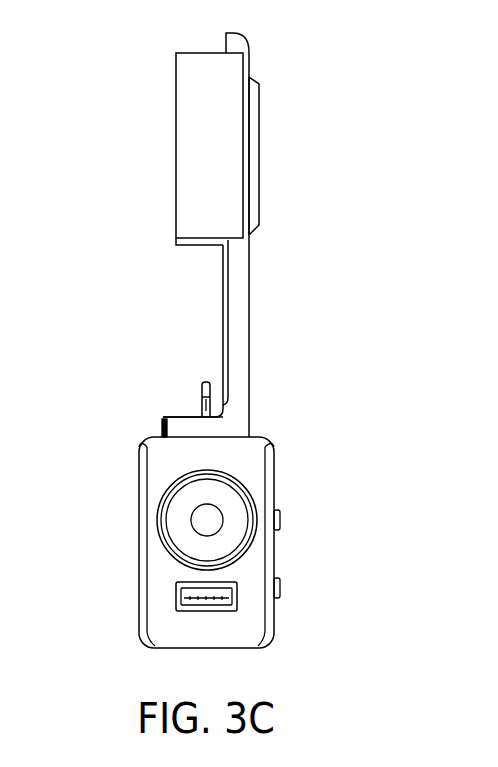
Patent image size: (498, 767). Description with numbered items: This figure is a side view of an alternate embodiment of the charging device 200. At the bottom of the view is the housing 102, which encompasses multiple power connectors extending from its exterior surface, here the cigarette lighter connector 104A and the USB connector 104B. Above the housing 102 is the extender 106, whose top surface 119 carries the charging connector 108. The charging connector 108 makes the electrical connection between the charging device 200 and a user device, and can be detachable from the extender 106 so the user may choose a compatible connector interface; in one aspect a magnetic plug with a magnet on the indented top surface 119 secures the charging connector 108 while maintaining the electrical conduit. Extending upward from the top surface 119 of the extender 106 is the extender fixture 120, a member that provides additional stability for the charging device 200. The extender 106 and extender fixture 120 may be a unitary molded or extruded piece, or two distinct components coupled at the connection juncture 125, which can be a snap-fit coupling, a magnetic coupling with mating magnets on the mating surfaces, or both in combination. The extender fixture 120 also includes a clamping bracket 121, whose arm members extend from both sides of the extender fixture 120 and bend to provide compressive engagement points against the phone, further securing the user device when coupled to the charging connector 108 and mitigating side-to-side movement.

The charging device 200 is at (330, 28).
The connection juncture 125 is at (236, 412).
The clamping bracket 121 is at (176, 143).
The extender fixture 120 is at (223, 265).
The charging connector 108 is at (203, 392).
The top surface 119 is at (163, 417).
The extender 106 is at (165, 431).
The housing 102 is at (252, 465).
The cigarette lighter connector 104A is at (160, 512).
The USB connector 104B is at (176, 597).